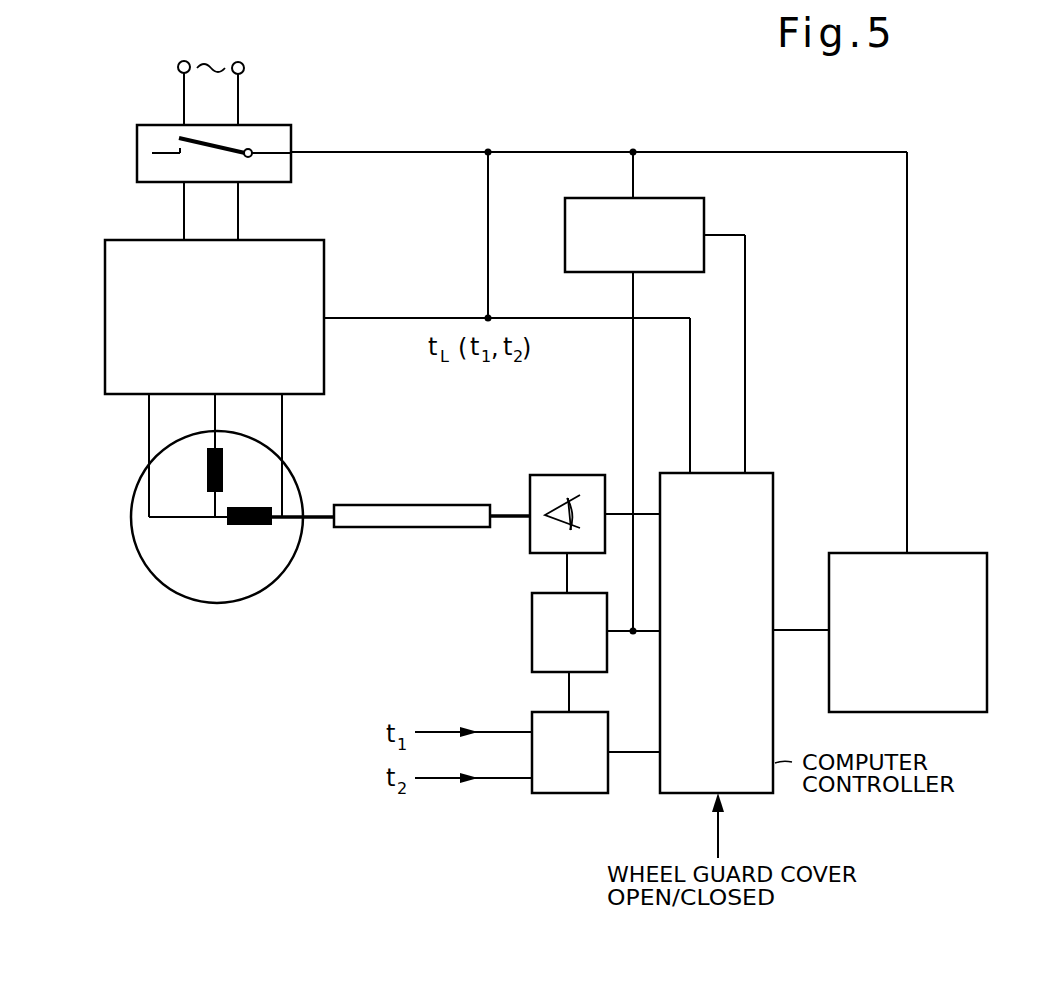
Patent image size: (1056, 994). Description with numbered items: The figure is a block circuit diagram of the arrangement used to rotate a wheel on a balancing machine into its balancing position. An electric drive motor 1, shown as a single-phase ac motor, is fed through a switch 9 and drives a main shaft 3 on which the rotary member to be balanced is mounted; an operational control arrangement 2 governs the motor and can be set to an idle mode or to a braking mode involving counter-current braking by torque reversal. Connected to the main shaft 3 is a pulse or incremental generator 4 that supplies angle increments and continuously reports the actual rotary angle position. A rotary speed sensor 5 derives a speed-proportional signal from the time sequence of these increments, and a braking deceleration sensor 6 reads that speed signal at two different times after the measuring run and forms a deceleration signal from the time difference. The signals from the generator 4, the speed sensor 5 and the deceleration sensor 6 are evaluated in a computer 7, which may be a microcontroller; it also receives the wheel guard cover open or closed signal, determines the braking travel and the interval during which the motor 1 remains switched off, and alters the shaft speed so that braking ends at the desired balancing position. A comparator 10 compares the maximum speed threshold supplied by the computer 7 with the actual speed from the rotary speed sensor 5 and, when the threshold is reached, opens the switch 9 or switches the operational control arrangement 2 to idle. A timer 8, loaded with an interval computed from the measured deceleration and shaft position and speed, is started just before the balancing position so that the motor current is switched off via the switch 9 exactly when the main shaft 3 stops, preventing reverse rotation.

The electric drive motor 1 is at (137, 548).
The operational control arrangement 2 is at (105, 308).
The main shaft 3 is at (390, 505).
The pulse generator or incremental generator 4 is at (555, 475).
The rotary speed sensor 5 is at (532, 620).
The braking deceleration sensor 6 is at (573, 793).
The computer 7 is at (738, 793).
The timer 8 is at (987, 568).
The switch 9 is at (137, 153).
The comparator 10 is at (688, 208).